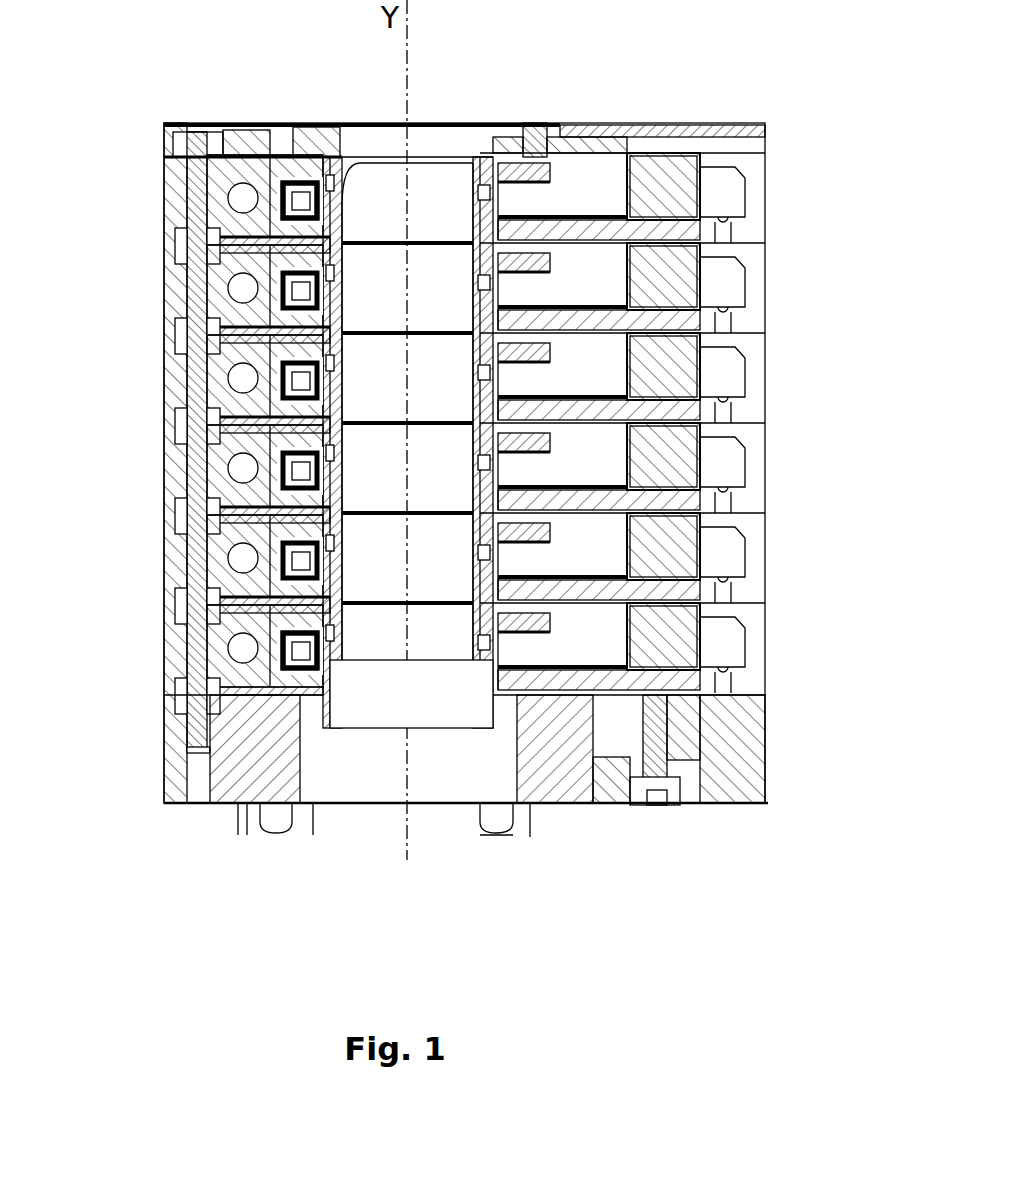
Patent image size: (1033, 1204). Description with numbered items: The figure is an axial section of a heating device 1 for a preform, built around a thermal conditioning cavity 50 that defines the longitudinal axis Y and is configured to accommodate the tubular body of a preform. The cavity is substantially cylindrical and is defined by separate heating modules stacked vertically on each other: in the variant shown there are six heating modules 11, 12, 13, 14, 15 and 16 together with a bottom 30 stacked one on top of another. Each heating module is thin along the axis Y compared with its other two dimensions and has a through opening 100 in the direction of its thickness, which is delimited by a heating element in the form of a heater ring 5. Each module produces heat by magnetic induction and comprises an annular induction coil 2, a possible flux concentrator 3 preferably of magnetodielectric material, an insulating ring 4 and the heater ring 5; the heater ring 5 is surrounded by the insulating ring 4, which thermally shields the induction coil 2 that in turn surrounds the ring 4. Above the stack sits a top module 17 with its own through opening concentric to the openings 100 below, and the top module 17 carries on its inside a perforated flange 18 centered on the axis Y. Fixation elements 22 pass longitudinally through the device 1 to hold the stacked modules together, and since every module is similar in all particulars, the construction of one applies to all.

The heating device 1 is at (122, 60).
The induction coil 2 is at (307, 197).
The flux concentrator 3 is at (282, 165).
The insulating ring 4 is at (345, 200).
The heater ring 5 is at (452, 200).
The heating module 11 is at (163, 200).
The heating module 12 is at (160, 300).
The heating module 13 is at (163, 388).
The heating module 14 is at (163, 480).
The heating module 15 is at (162, 565).
The heating module 16 is at (158, 653).
The top module 17 is at (605, 126).
The perforated flange 18 is at (531, 125).
The fixation element 22 is at (193, 753).
The bottom 30 is at (158, 743).
The thermal conditioning cavity 50 is at (359, 108).
The through opening 100 is at (457, 198).